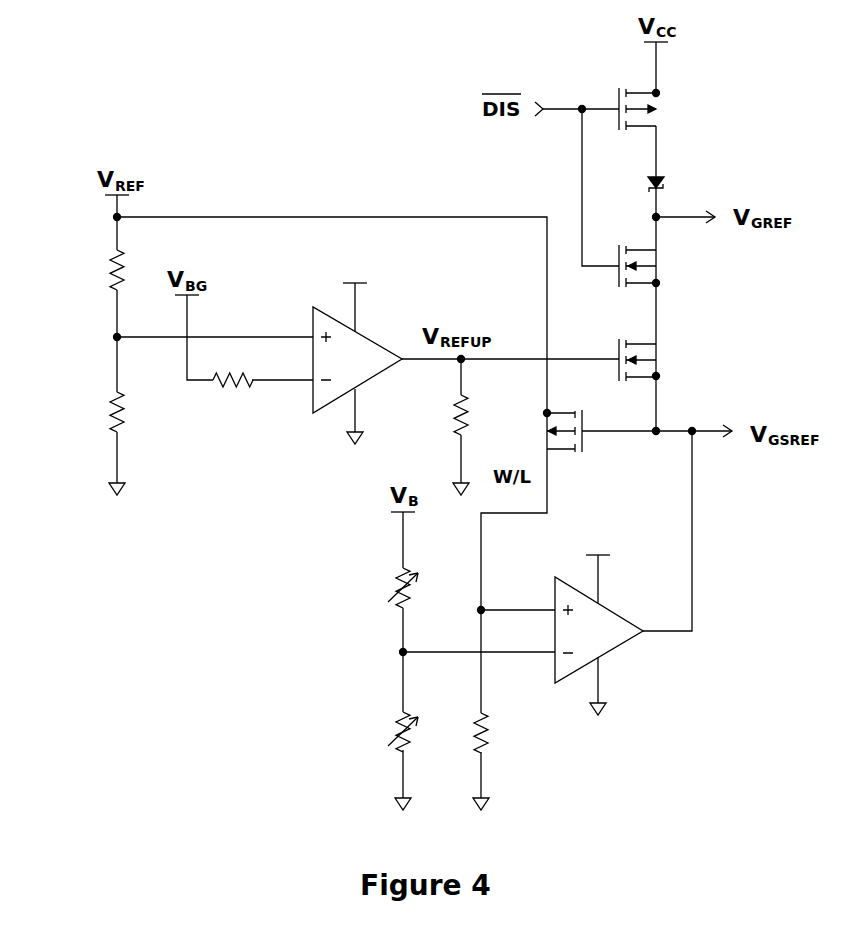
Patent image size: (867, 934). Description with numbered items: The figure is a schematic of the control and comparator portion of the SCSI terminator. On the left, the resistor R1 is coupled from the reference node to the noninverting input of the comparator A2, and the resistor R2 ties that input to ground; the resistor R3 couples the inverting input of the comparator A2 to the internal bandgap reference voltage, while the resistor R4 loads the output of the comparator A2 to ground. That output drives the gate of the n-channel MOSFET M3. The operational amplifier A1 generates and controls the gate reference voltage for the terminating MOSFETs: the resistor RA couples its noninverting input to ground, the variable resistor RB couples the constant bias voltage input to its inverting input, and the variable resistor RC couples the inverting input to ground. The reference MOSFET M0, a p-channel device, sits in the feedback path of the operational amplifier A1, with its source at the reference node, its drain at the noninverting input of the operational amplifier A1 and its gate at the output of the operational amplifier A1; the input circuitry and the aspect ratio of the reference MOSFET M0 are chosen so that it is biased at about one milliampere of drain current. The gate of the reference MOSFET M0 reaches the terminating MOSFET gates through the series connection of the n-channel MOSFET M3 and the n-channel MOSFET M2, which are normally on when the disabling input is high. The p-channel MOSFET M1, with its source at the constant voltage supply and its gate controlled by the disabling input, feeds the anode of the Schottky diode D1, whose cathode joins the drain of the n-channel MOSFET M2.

The resistor R1 is at (102, 270).
The resistor R2 is at (102, 412).
The resistor R3 is at (233, 368).
The resistor R4 is at (446, 415).
The resistor RA is at (466, 733).
The variable resistor RB is at (392, 588).
The variable resistor RC is at (392, 732).
The operational amplifier A1 is at (599, 620).
The comparator A2 is at (357, 348).
The reference MOSFET M0 is at (542, 431).
The p-channel MOSFET M1 is at (658, 109).
The n-channel MOSFET M2 is at (659, 266).
The n-channel MOSFET M3 is at (658, 360).
The Schottky diode D1 is at (673, 183).